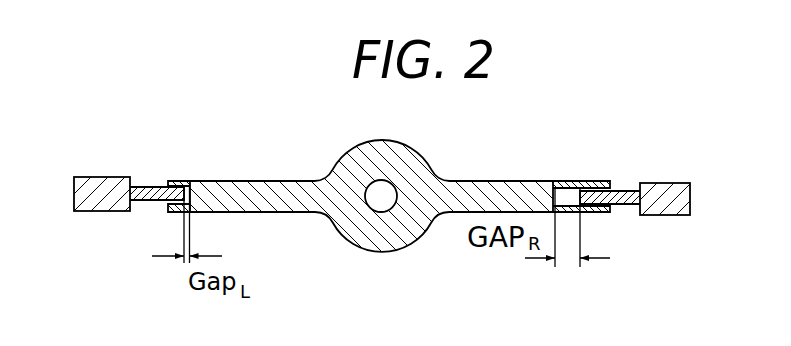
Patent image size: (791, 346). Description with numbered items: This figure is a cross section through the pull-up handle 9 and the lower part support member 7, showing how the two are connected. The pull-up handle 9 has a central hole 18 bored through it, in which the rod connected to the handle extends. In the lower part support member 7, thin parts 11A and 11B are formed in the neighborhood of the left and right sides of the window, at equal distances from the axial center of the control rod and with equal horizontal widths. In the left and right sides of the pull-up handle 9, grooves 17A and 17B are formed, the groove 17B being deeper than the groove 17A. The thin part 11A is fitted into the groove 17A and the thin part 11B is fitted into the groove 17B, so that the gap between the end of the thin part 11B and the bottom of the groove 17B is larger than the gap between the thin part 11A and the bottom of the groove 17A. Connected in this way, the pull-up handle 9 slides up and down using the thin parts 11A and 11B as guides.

The lower part support member 7 is at (97, 212).
The pull-up handle 9 is at (290, 213).
The thin part 11A is at (147, 185).
The thin part 11B is at (628, 205).
The groove 17A is at (195, 182).
The groove 17B is at (552, 188).
The hole 18 is at (389, 202).